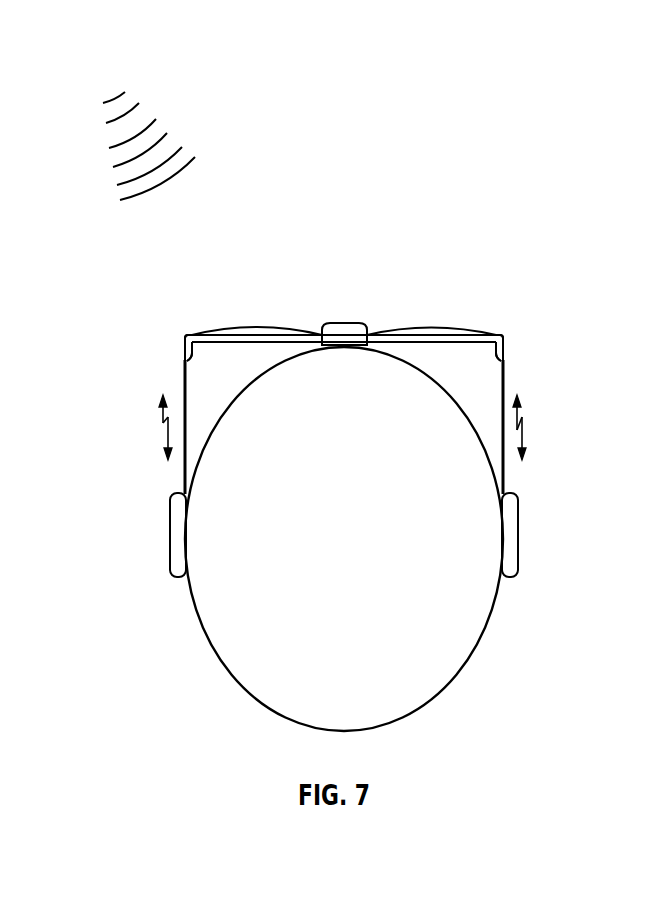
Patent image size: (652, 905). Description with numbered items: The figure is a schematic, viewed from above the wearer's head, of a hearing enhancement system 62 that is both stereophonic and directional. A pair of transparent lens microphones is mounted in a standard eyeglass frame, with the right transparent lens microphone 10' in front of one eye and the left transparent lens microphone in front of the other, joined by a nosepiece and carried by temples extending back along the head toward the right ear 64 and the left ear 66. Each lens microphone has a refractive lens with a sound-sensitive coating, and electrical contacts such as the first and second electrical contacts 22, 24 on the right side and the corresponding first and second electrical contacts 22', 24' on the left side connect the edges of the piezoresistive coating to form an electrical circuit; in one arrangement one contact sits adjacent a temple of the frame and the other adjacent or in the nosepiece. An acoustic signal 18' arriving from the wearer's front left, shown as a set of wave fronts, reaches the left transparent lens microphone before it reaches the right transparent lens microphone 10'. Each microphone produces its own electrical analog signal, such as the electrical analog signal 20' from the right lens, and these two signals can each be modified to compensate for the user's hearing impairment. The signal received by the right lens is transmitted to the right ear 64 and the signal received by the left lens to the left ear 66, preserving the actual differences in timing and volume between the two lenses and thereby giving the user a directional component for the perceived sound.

The acoustic signal 18' is at (169, 150).
The hearing enhancement system 62 is at (533, 108).
The right transparent lens microphone 10' is at (445, 313).
The first electrical contact 22' is at (132, 352).
The second electrical contact 24' is at (154, 352).
The first electrical contact 22 is at (535, 354).
The second electrical contact 24 is at (550, 354).
The electrical analog signal 20' is at (551, 429).
The left ear 66 is at (170, 535).
The right ear 64 is at (518, 535).